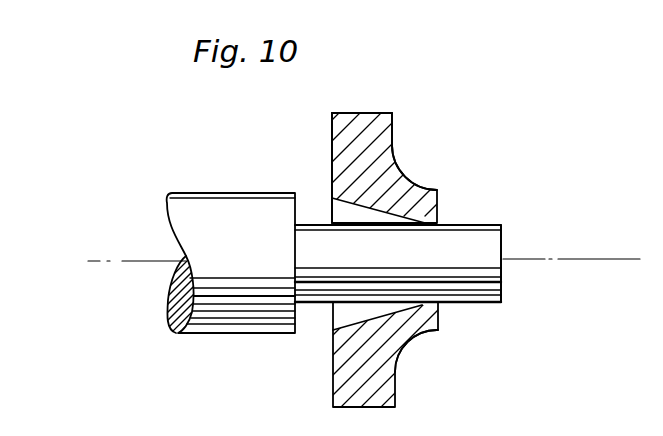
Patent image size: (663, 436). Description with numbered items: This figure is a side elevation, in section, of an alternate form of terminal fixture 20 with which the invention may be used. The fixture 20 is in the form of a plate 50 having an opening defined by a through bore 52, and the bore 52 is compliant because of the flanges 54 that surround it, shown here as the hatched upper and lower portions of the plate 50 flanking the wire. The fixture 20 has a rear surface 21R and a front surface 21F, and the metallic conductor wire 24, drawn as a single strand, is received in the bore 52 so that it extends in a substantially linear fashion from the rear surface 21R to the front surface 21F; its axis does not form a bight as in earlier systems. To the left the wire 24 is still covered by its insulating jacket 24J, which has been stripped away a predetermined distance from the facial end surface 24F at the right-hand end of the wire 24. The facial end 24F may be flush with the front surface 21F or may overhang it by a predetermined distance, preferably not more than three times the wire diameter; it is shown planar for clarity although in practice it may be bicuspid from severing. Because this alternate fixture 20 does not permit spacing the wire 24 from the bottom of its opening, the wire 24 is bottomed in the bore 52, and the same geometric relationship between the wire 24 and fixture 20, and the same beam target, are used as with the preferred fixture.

The terminal fixture 20 is at (420, 106).
The rear surface 21R is at (332, 145).
The front surface 21F is at (458, 145).
The conductor wire 24 is at (465, 224).
The facial end surface 24F is at (590, 243).
The insulating jacket 24J is at (250, 205).
The plate 50 is at (357, 113).
The bore 52 is at (370, 318).
The flanges 54 is at (405, 193).